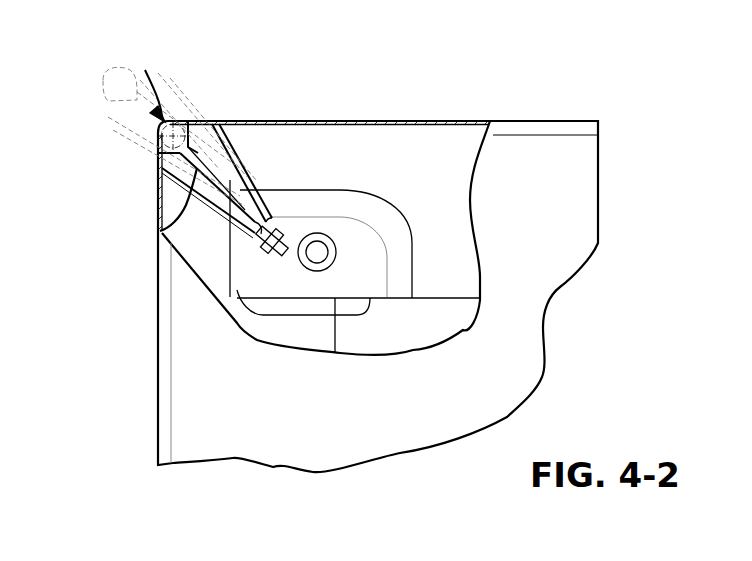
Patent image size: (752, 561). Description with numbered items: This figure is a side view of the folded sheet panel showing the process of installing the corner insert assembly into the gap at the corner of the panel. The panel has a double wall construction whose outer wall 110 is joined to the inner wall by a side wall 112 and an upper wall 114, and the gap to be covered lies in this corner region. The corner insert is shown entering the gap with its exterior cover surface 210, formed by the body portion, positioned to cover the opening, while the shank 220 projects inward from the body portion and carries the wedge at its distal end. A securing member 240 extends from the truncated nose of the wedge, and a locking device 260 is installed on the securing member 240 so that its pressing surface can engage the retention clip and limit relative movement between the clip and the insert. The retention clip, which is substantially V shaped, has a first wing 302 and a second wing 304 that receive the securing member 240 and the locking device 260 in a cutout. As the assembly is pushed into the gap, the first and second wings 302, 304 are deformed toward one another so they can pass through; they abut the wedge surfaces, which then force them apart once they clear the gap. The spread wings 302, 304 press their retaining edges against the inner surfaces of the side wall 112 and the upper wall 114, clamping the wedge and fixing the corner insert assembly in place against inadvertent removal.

The outer wall 110 is at (578, 257).
The side wall 112 is at (158, 315).
The upper wall 114 is at (350, 120).
The exterior cover surface 210 is at (179, 118).
The shank 220 is at (192, 133).
The securing member 240 is at (281, 252).
The locking device 260 is at (255, 236).
The first wing 302 is at (240, 144).
The second wing 304 is at (158, 231).